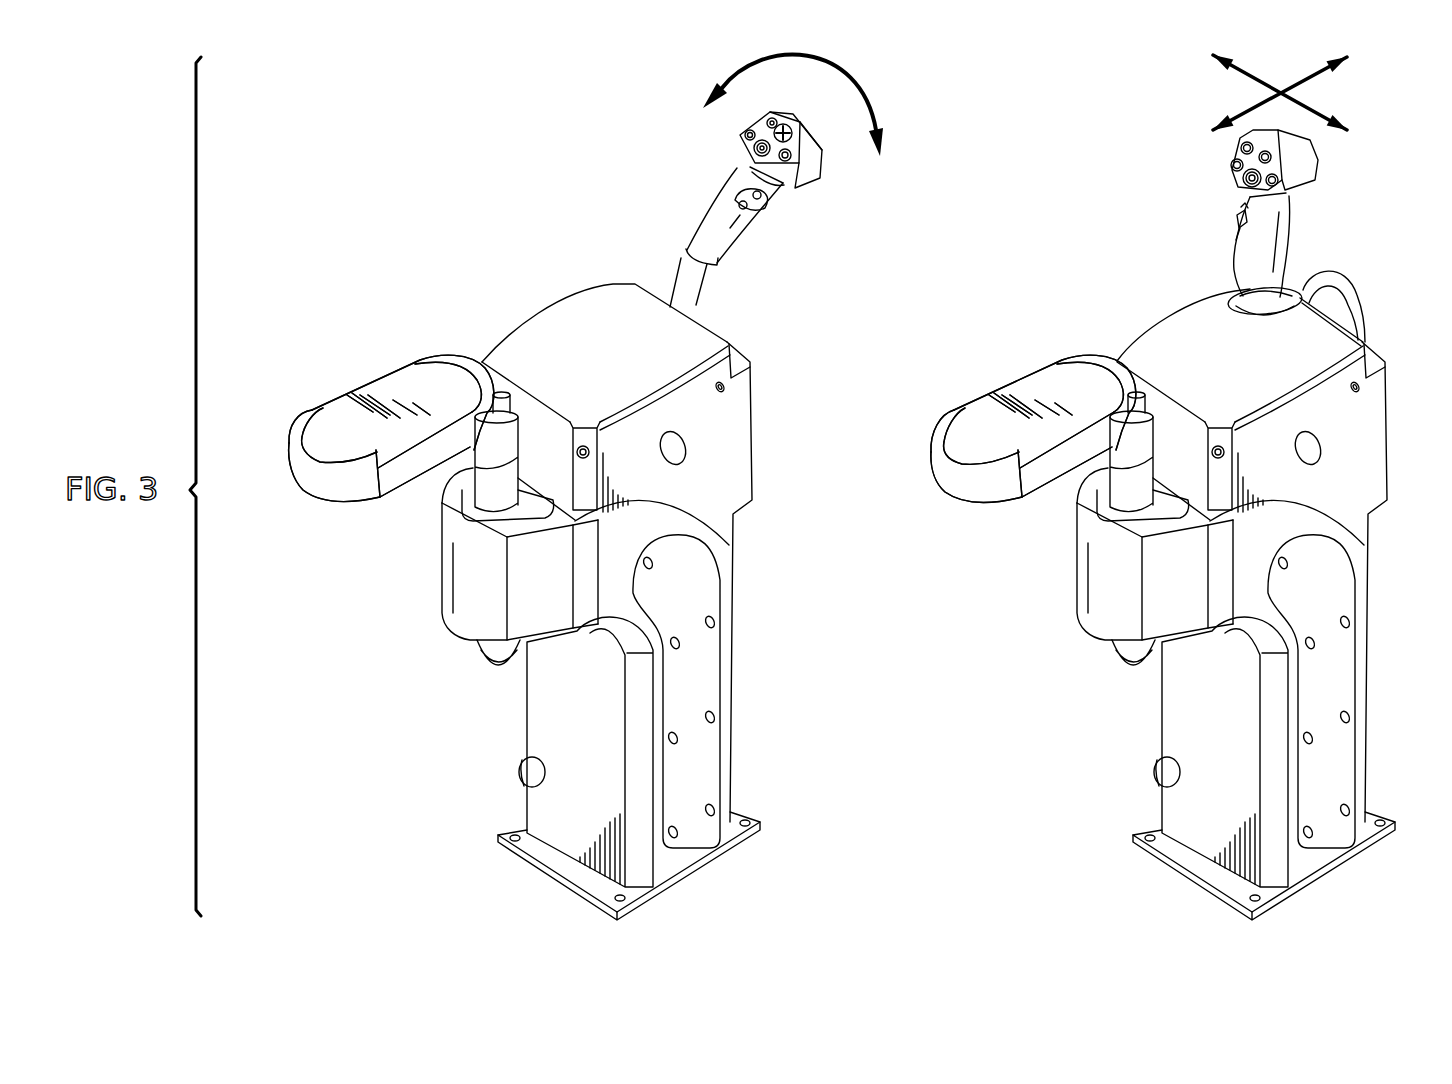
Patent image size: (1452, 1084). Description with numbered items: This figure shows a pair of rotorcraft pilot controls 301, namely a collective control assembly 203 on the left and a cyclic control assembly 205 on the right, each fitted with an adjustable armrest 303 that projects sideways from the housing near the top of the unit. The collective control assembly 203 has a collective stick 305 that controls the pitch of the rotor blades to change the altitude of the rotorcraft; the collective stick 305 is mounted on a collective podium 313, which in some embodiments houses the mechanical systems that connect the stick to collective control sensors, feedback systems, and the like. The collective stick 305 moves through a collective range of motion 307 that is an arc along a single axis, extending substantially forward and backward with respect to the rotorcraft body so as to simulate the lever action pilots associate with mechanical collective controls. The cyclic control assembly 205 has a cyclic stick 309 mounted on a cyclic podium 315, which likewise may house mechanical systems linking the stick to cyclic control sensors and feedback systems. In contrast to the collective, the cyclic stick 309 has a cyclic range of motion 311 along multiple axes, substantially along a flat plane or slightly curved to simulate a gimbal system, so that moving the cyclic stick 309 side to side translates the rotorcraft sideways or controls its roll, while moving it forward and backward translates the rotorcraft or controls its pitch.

The collective control assembly 203 is at (760, 918).
The cyclic control assembly 205 is at (1395, 918).
The hand controller system 301 is at (376, 141).
The adjustable armrests 303 is at (283, 357).
The collective stick 305 is at (702, 205).
The collective range of motion 307 is at (883, 100).
The cyclic stick 309 is at (1233, 253).
The cyclic range of motion 311 is at (1306, 104).
The collective podium 313 is at (733, 678).
The cyclic podium 315 is at (1368, 678).